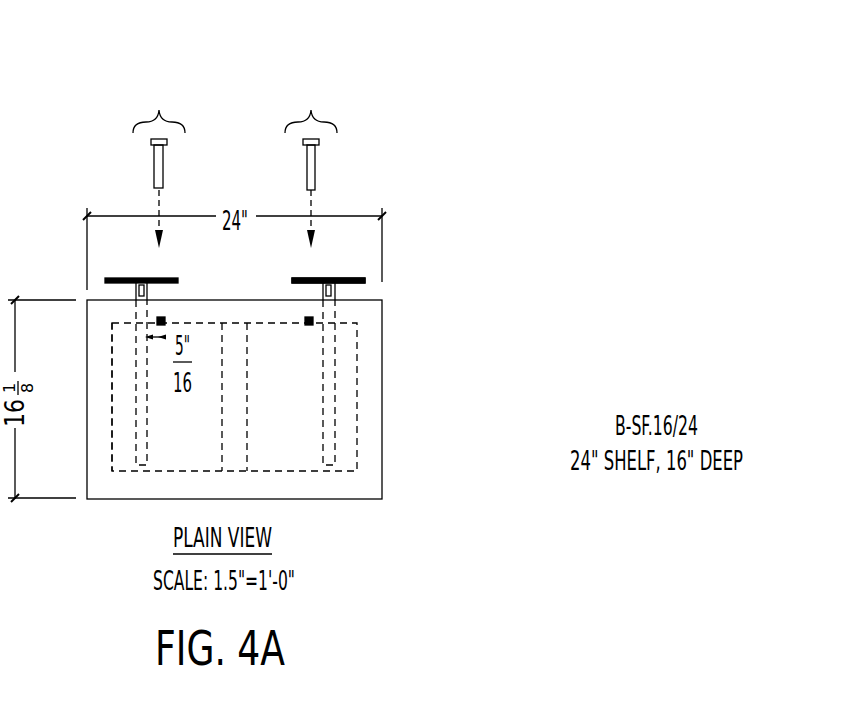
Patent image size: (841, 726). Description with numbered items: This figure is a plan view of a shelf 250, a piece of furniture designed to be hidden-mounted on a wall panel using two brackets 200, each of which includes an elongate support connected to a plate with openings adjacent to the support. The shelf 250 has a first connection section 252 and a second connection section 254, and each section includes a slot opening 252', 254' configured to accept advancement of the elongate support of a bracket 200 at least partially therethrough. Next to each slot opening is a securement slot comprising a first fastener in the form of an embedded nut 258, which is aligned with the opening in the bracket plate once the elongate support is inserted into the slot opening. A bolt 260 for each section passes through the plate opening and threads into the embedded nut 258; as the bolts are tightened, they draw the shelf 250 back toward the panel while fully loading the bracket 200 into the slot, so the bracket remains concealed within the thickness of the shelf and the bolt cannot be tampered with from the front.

The bracket 200 is at (372, 281).
The shelf 250 is at (388, 458).
The first connection section 252 is at (158, 127).
The second connection section 254 is at (310, 127).
The slot opening 252' is at (75, 396).
The slot opening 254' is at (399, 382).
The embedded nut 258 is at (313, 322).
The bolt 260 is at (316, 170).